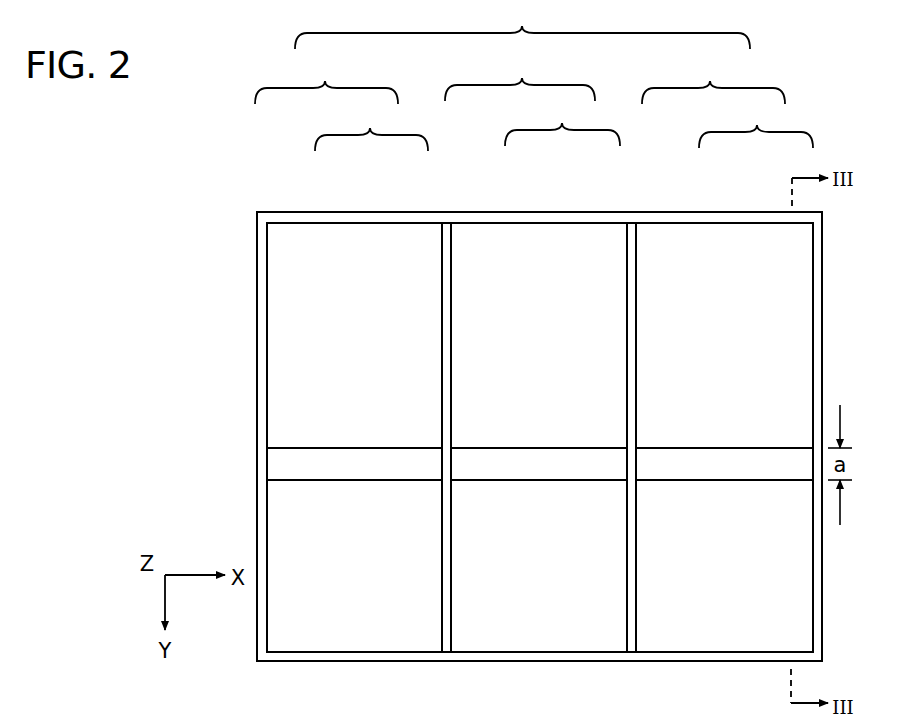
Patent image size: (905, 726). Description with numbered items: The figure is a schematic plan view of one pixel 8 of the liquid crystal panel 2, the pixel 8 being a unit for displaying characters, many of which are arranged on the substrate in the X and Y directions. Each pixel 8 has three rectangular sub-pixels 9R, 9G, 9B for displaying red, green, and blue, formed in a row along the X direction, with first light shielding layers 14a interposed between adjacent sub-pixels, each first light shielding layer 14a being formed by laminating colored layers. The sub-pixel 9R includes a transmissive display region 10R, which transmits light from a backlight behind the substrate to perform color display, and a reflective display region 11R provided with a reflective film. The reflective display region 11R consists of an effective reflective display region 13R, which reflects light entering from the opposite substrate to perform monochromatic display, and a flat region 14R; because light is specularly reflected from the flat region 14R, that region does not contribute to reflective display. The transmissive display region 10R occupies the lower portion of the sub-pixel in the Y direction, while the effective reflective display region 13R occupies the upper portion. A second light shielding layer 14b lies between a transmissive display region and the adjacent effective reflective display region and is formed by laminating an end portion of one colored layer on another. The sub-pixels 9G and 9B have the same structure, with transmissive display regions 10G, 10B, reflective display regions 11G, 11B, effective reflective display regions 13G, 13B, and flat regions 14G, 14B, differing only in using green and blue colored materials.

The liquid crystal panel 2 is at (243, 185).
The pixel 8 is at (522, 24).
The sub-pixel 9B is at (326, 80).
The sub-pixel 9G is at (520, 76).
The sub-pixel 9R is at (713, 78).
The transmissive display region 10B is at (307, 555).
The transmissive display region 10G is at (486, 555).
The transmissive display region 10R is at (663, 557).
The reflective display region 11B is at (371, 126).
The reflective display region 11G is at (562, 121).
The reflective display region 11R is at (756, 122).
The effective reflective display region 13B is at (340, 280).
The effective reflective display region 13G is at (535, 282).
The effective reflective display region 13R is at (720, 275).
The flat region 14B is at (422, 463).
The flat region 14G is at (605, 465).
The flat region 14R is at (705, 465).
The first light shielding layer 14a is at (447, 592).
The second light shielding layer 14b is at (585, 657).